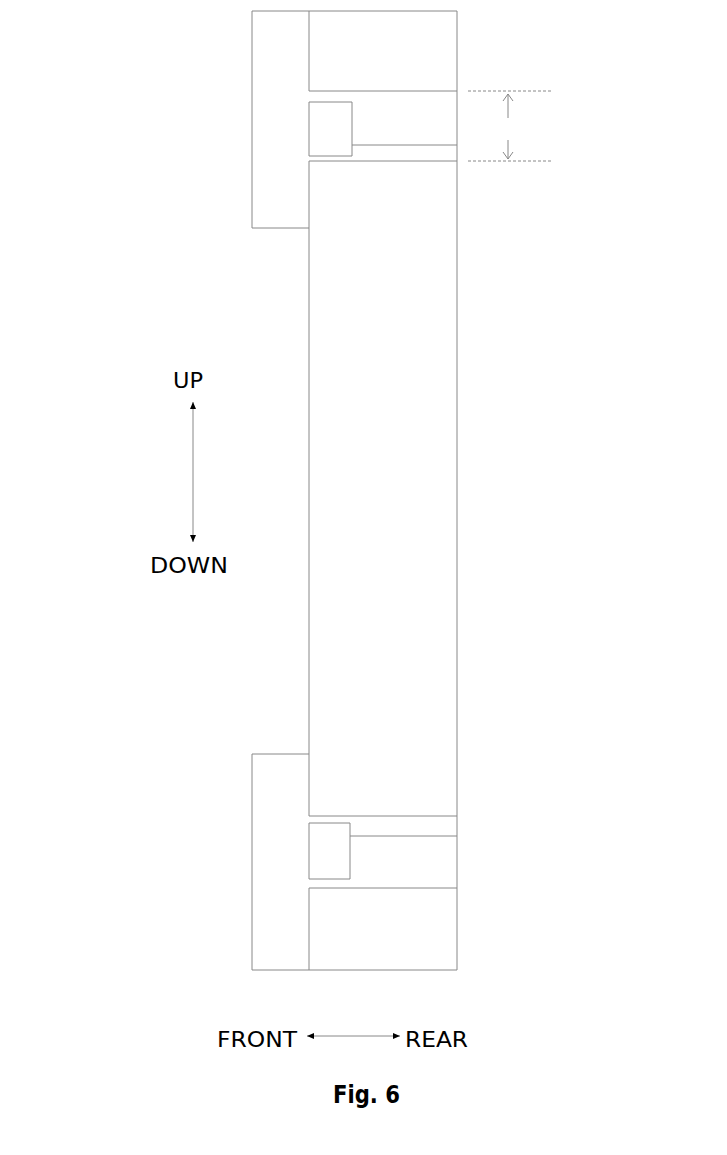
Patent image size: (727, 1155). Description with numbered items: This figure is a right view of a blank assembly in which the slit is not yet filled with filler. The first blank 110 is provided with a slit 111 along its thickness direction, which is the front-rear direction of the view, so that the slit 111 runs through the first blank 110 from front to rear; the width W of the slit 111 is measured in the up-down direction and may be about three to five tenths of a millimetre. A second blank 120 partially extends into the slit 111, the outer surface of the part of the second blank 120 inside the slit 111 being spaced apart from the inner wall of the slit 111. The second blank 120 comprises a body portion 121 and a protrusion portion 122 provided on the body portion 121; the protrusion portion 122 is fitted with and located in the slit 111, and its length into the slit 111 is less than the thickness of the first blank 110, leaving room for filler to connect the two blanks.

The first blank 110 is at (392, 522).
The slit 111 is at (443, 121).
The second blank 120 is at (202, 490).
The body portion 121 is at (282, 197).
The protrusion portion 122 is at (333, 127).